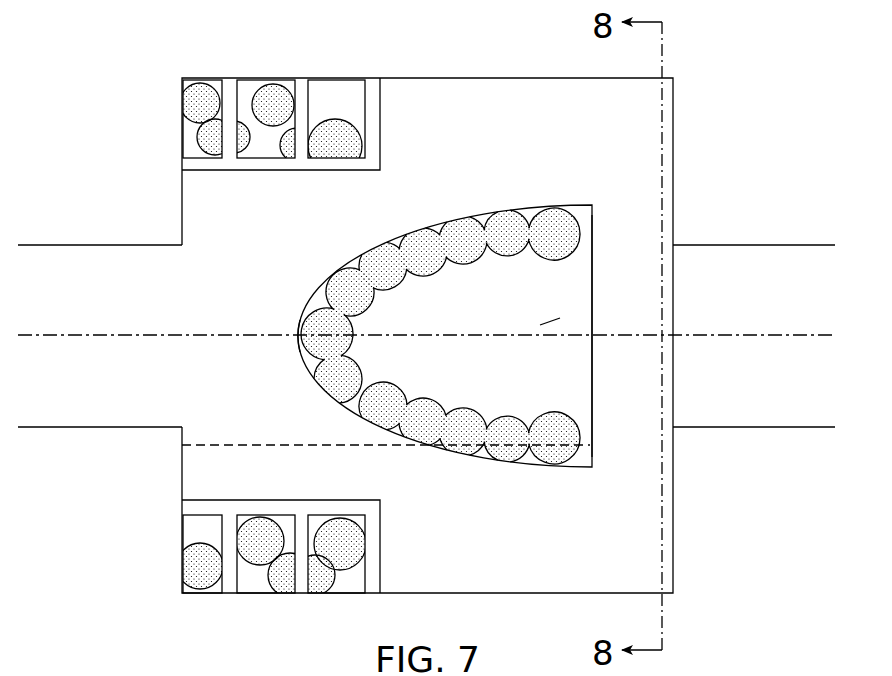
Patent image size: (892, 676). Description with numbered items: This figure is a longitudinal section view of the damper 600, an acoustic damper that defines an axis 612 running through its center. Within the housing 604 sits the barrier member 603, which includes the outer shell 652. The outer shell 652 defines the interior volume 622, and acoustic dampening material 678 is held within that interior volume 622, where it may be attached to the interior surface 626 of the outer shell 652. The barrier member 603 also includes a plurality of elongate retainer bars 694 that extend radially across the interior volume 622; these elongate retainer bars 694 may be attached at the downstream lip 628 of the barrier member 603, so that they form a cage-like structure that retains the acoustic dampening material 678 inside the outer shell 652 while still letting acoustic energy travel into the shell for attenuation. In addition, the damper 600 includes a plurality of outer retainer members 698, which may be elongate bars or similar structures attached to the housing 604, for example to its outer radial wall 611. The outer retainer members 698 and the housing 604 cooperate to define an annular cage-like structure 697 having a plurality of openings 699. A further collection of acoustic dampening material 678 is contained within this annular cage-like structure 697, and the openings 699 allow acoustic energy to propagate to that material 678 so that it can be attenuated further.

The damper 600 is at (117, 107).
The barrier member 603 is at (440, 314).
The housing 604 is at (468, 78).
The outer radial wall 611 is at (337, 80).
The axis 612 is at (802, 335).
The interior volume 622 is at (537, 315).
The interior surface 626 is at (283, 212).
The downstream lip 628 is at (584, 212).
The outer shell 652 is at (313, 303).
The acoustic dampening material 678 is at (272, 102).
The elongate retainer bars 694 is at (593, 268).
The annular cage-like structure 697 is at (228, 572).
The outer retainer members 698 is at (383, 125).
The openings 699 is at (360, 543).